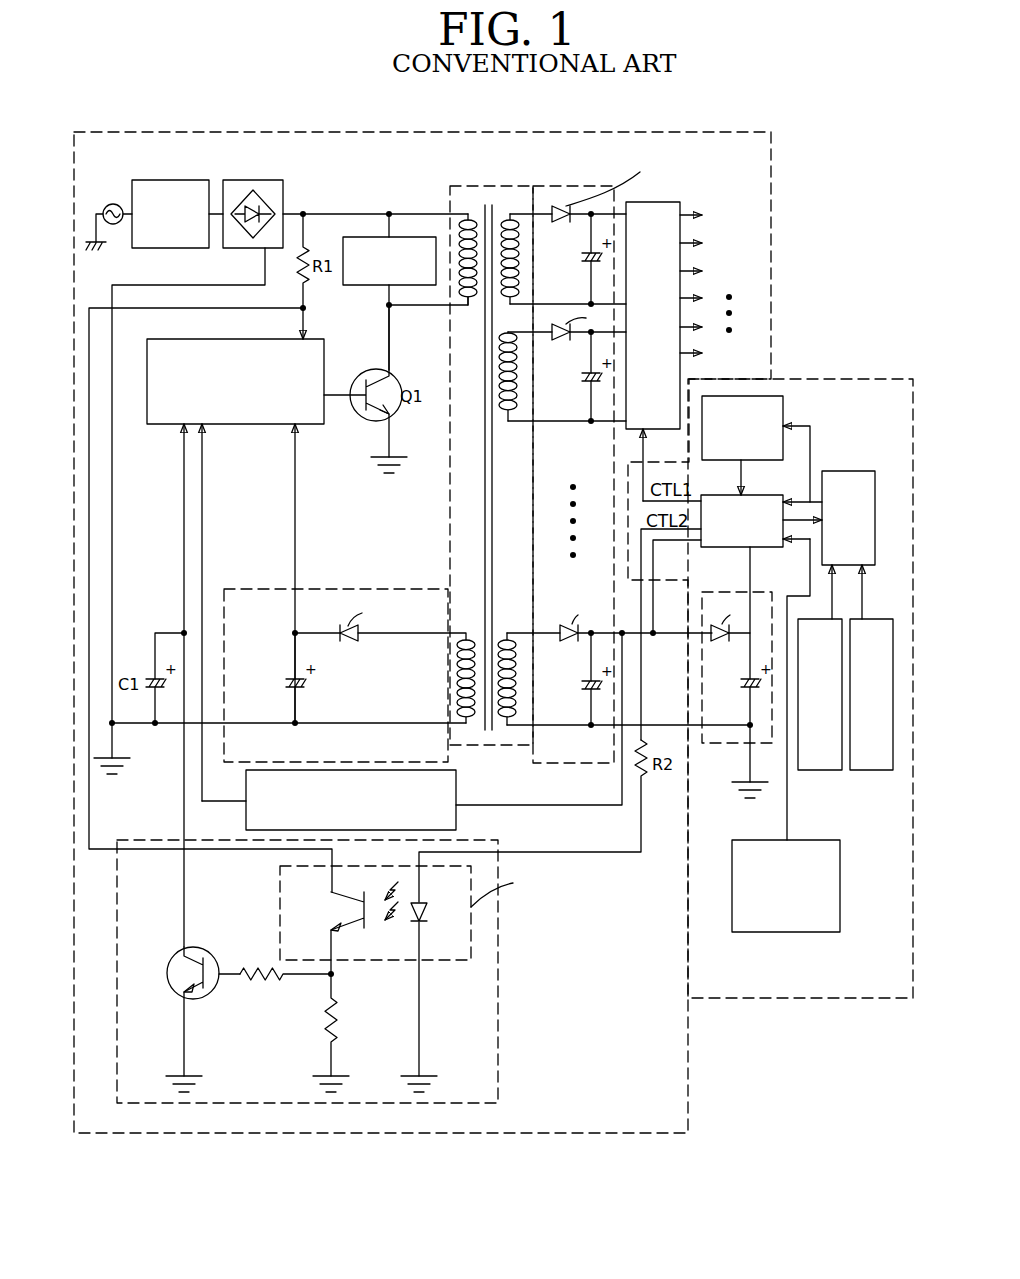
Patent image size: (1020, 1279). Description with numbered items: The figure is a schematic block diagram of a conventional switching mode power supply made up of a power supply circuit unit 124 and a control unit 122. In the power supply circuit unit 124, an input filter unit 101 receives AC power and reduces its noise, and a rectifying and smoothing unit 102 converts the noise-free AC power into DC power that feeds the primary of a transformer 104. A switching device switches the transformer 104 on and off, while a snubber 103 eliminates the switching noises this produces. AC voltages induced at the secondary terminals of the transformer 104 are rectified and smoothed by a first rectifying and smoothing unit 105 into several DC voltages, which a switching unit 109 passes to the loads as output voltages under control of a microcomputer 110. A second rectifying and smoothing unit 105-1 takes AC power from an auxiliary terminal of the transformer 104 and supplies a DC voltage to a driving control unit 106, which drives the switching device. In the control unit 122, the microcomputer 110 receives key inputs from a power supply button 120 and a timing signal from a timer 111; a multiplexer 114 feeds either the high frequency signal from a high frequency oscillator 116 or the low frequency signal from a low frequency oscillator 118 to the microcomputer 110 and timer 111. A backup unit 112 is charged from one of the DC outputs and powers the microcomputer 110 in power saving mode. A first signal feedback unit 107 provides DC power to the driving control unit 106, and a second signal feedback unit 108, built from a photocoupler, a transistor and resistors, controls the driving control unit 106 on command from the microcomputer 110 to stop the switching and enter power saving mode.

The input filter unit 101 is at (168, 180).
The rectifying and smoothing unit 102 is at (240, 180).
The snubber 103 is at (357, 237).
The transformer 104 is at (480, 186).
The first rectifying and smoothing unit 105 is at (572, 186).
The second rectifying and smoothing unit 105-1 is at (320, 589).
The driving control unit 106 is at (182, 339).
The first signal feedback unit 107 is at (456, 805).
The second signal feedback unit 108 is at (498, 945).
The switching unit 109 is at (640, 202).
The microcomputer 110 is at (718, 547).
The timer 111 is at (783, 414).
The backup unit 112 is at (758, 590).
The multiplexer 114 is at (838, 471).
The high frequency oscillator 116 is at (806, 770).
The low frequency oscillator 118 is at (862, 770).
The power supply button 120 is at (767, 932).
The control unit 122 is at (836, 379).
The power supply circuit unit 124 is at (567, 1133).